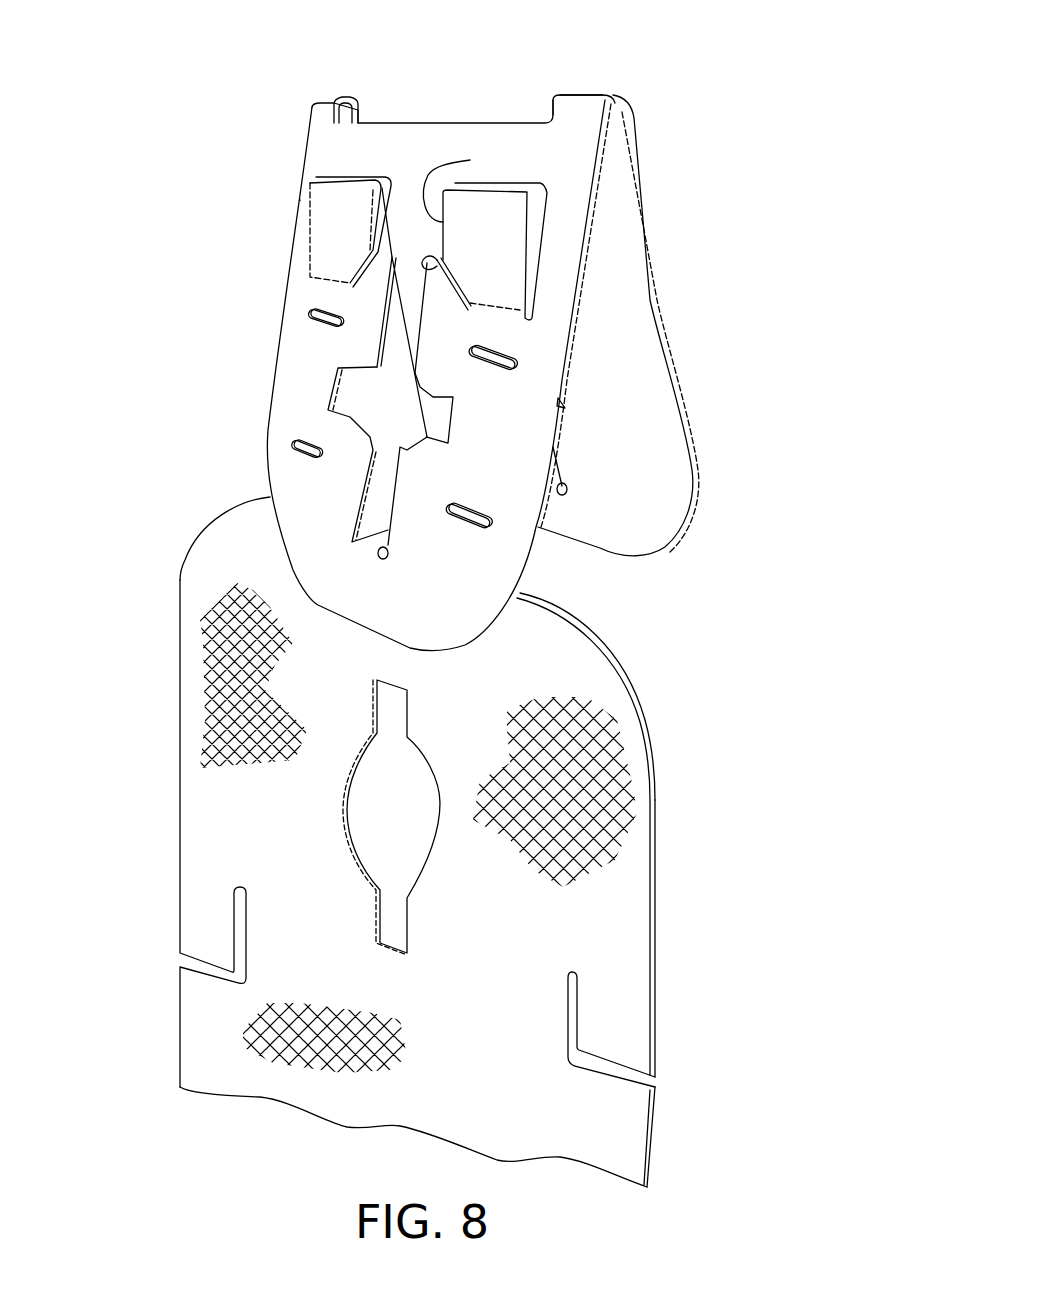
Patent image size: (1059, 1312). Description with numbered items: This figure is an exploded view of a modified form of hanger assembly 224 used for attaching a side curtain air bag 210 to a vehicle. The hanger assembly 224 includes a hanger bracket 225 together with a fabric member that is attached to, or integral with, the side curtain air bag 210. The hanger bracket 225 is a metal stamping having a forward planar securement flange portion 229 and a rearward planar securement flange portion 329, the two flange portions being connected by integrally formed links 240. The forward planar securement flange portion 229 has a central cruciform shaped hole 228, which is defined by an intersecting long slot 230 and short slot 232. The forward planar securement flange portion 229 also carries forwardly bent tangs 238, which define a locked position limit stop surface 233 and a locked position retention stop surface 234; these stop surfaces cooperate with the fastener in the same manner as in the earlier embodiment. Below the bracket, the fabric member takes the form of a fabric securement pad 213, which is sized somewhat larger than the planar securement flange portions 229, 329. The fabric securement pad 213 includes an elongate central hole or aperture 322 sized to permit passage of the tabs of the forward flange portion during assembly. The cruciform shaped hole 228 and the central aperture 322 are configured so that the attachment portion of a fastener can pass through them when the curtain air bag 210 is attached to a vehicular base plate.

The side curtain air bag 210 is at (630, 1108).
The fabric securement pad 213 is at (240, 533).
The hanger assembly 224 is at (240, 461).
The hanger bracket 225 is at (286, 240).
The central cruciform shaped hole 228 is at (381, 399).
The forward planar securement flange portion 229 is at (292, 355).
The long slot 230 is at (430, 325).
The short slot 232 is at (453, 417).
The locked position limit stop surface 233 is at (470, 160).
The locked position retention stop surface 234 is at (381, 253).
The forwardly bent tangs 238 is at (336, 201).
The links 240 is at (335, 103).
The central hole or aperture 322 is at (427, 760).
The rearward planar securement flange portion 329 is at (655, 214).